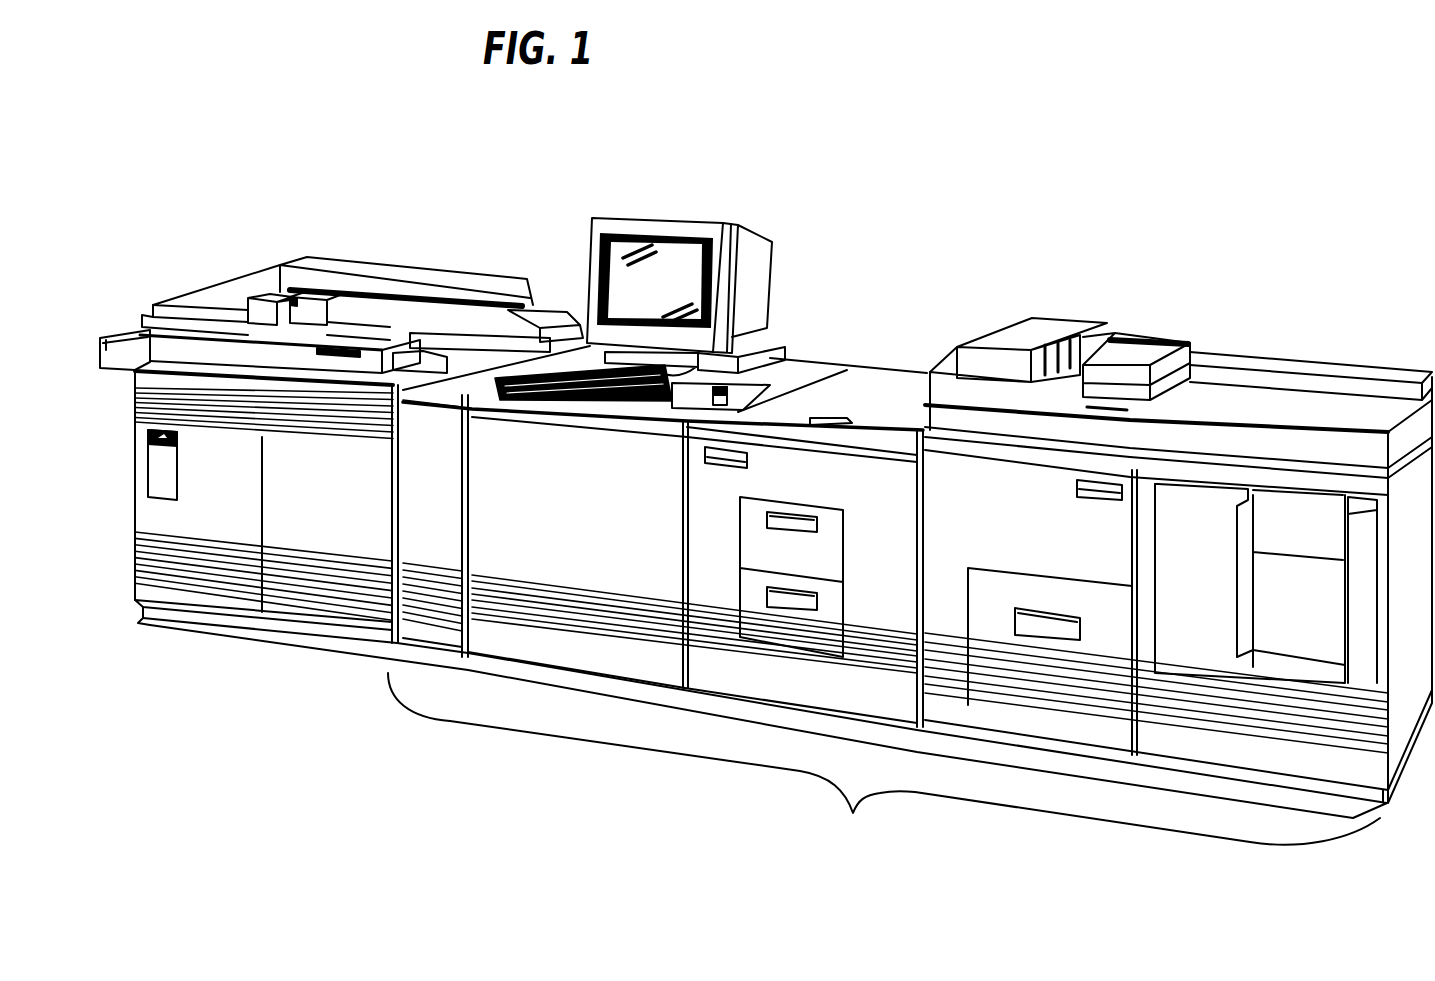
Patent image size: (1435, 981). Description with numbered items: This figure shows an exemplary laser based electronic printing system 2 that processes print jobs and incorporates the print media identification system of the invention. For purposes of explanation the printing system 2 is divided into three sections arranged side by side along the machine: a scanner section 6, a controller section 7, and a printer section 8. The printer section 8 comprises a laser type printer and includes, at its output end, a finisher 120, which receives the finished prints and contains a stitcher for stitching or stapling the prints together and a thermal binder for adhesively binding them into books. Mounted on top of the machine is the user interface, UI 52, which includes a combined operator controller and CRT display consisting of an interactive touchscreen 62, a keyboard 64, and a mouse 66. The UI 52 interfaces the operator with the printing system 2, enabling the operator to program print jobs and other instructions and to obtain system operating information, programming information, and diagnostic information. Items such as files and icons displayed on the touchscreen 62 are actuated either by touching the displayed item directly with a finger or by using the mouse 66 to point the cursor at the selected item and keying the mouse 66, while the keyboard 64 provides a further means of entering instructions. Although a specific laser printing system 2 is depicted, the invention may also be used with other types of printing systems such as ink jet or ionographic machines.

The printing system 2 is at (914, 146).
The scanner section 6 is at (388, 244).
The controller section 7 is at (124, 517).
The printer section 8 is at (851, 851).
The UI 52 is at (689, 207).
The touchscreen 62 is at (620, 291).
The keyboard 64 is at (571, 407).
The mouse 66 is at (673, 413).
The finisher 120 is at (1290, 336).